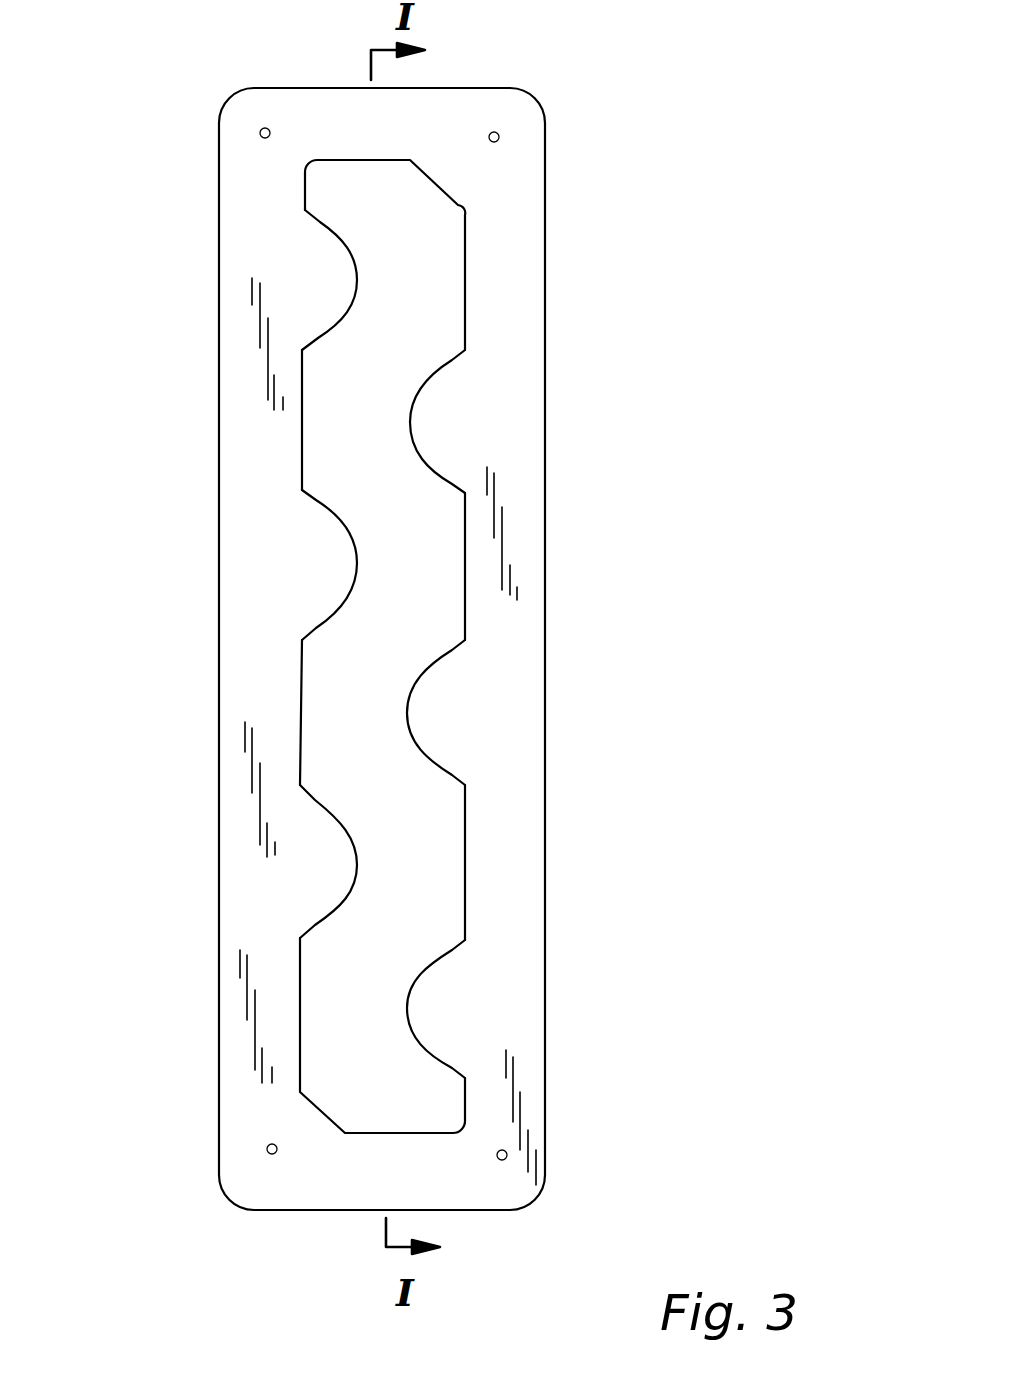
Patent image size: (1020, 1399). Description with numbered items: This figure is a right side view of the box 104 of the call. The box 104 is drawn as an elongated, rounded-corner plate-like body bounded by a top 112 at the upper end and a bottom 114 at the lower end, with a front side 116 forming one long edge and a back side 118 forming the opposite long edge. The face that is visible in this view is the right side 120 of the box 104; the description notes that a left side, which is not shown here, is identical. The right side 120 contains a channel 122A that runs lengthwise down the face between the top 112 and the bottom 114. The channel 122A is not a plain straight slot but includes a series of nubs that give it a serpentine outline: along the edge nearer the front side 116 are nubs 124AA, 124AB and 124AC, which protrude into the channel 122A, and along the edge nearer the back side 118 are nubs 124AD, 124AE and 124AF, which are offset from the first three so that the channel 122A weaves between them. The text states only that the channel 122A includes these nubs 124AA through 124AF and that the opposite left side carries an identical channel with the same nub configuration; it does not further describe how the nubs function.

The box 104 is at (427, 646).
The top 112 is at (470, 82).
The bottom 114 is at (483, 1216).
The front side 116 is at (210, 769).
The back side 118 is at (555, 605).
The right side 120 is at (252, 425).
The channel 122A is at (394, 646).
The nub 124AA is at (335, 267).
The nub 124AB is at (337, 563).
The nub 124AC is at (337, 877).
The nub 124AD is at (435, 423).
The nub 124AE is at (465, 713).
The nub 124AF is at (428, 1012).